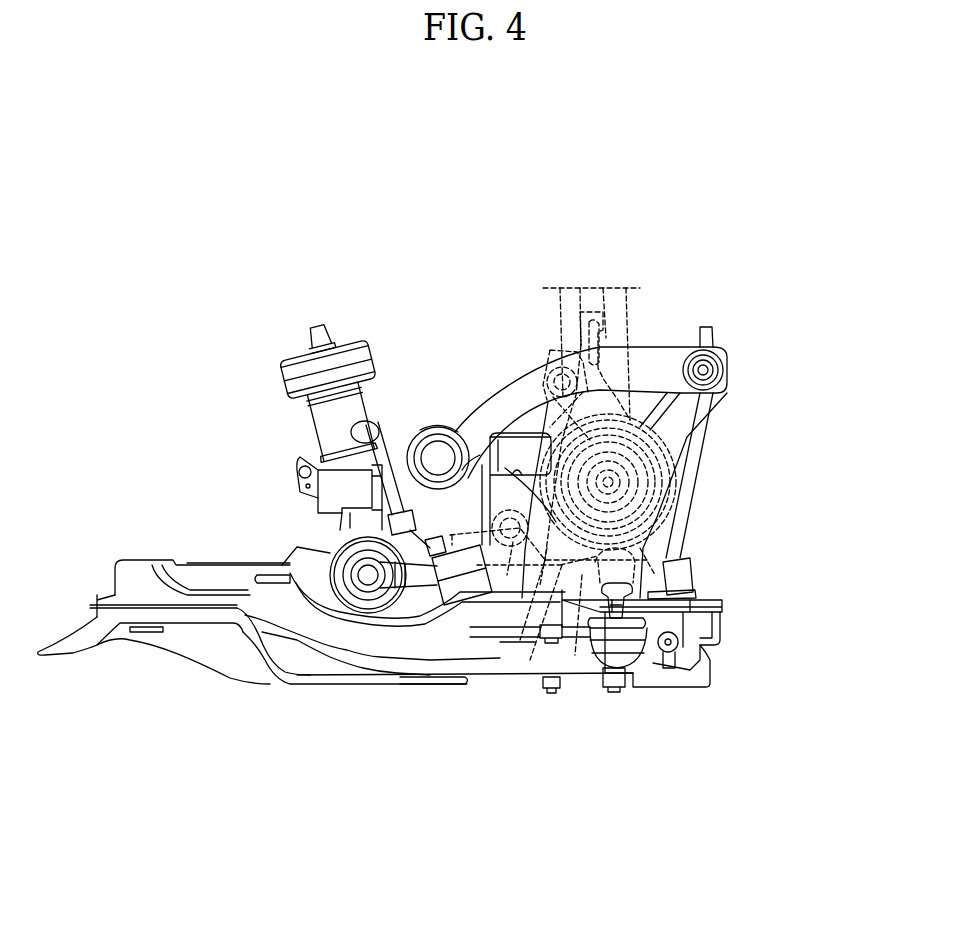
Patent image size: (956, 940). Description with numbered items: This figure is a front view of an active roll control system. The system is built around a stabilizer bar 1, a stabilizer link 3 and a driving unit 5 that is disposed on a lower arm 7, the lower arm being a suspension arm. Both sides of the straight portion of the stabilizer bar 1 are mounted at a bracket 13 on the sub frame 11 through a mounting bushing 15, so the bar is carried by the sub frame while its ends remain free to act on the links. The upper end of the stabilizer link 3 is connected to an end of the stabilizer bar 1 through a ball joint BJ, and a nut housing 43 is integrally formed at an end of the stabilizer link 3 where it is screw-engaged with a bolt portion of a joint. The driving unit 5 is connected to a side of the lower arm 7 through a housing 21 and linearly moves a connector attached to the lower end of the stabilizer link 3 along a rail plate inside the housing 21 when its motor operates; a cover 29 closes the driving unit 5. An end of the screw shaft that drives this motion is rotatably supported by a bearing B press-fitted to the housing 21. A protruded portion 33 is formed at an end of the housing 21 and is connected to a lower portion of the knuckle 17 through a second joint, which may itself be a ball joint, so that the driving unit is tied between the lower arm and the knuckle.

The stabilizer bar 1 is at (492, 400).
The stabilizer link 3 is at (683, 517).
The driving unit 5 is at (735, 624).
The lower arm 7 is at (428, 650).
The sub frame 11 is at (217, 647).
The bracket 13 is at (418, 535).
The mounting bushing 15 is at (427, 427).
The knuckle 17 is at (530, 620).
The housing 21 is at (702, 667).
The cover 29 is at (697, 608).
The protruded portion 33 is at (640, 668).
The nut housing 43 is at (690, 570).
The bearing B is at (668, 668).
The ball joint BJ is at (715, 370).